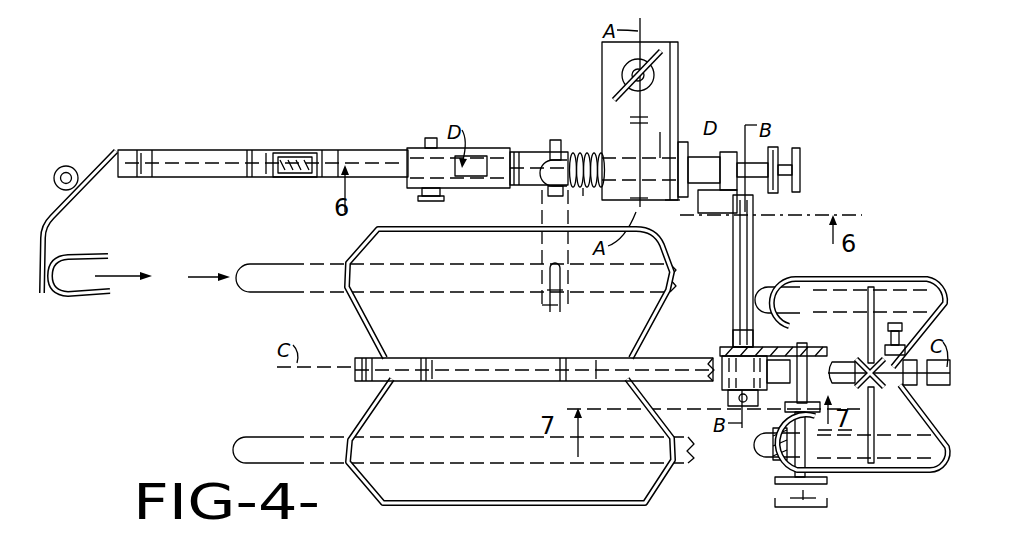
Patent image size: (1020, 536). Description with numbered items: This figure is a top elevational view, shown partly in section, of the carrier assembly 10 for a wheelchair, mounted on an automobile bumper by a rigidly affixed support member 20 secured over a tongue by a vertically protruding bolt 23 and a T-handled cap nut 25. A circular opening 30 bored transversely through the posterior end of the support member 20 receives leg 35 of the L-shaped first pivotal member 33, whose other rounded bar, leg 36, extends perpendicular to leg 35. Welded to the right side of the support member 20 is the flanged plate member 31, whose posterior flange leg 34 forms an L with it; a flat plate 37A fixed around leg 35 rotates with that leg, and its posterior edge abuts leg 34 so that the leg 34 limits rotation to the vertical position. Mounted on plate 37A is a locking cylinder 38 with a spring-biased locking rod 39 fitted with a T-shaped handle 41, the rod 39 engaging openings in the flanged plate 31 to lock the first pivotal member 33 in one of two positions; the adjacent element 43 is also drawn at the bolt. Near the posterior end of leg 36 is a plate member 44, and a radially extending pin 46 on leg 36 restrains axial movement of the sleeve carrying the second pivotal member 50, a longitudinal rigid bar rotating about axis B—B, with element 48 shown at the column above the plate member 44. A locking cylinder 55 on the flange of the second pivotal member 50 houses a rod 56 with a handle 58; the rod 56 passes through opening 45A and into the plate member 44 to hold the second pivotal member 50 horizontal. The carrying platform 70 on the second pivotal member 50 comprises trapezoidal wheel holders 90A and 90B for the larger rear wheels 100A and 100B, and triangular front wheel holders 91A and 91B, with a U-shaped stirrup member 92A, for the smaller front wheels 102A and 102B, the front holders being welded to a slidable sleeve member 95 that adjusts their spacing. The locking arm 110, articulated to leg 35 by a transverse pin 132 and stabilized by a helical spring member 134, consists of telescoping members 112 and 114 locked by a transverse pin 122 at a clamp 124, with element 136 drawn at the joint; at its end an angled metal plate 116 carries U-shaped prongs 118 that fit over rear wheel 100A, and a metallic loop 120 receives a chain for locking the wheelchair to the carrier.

The carrier assembly 10 is at (803, 90).
The rigidly affixed support member 20 is at (682, 65).
The bolt 23 is at (632, 75).
The T-handled cap nut 25 is at (630, 68).
The circular opening 30 is at (626, 152).
The flanged plate member 31 is at (668, 142).
The first pivotal member 33 is at (768, 147).
The flange leg 34 is at (680, 207).
The leg of first pivot member 35 is at (718, 155).
The leg of first pivot member 36 is at (733, 258).
The flat plate 37A is at (690, 143).
The locking cylinder 38 is at (717, 201).
The locking rod 39 is at (650, 212).
The T-shaped handle 41 is at (800, 180).
The lock nut 43 is at (737, 152).
The plate member 44 is at (722, 349).
The transversely extending opening 45A is at (798, 343).
The radially extending pin 46 is at (730, 397).
The bracket 48 is at (735, 333).
The second pivotal member 50 is at (350, 388).
The locking cylinder 55 is at (828, 362).
The rod 56 is at (792, 447).
The handle 58 is at (773, 483).
The carrying platform 70 is at (338, 244).
The wheel holder 90A is at (358, 311).
The wheel holder 90B is at (462, 508).
The front wheel holder 91A is at (920, 278).
The front wheel holder 91B is at (890, 468).
The U-shaped stirrup member 92A is at (868, 305).
The slidable sleeve member 95 is at (903, 386).
The rear wheel 100A is at (310, 263).
The rear wheel 100B is at (288, 435).
The front wheel 102A is at (765, 260).
The front wheel 102B is at (754, 447).
The locking arm 110 is at (250, 150).
The inner telescoping member 112 is at (515, 150).
The outer telescoping member 114 is at (190, 148).
The angled metal plate 116 is at (63, 207).
The U-shaped prongs 118 is at (95, 257).
The metallic loop 120 is at (75, 168).
The transverse pin 122 is at (430, 138).
The clamp 124 is at (422, 148).
The transverse pin 132 is at (552, 196).
The helical spring member 134 is at (583, 190).
The spring clevis 136 is at (574, 152).